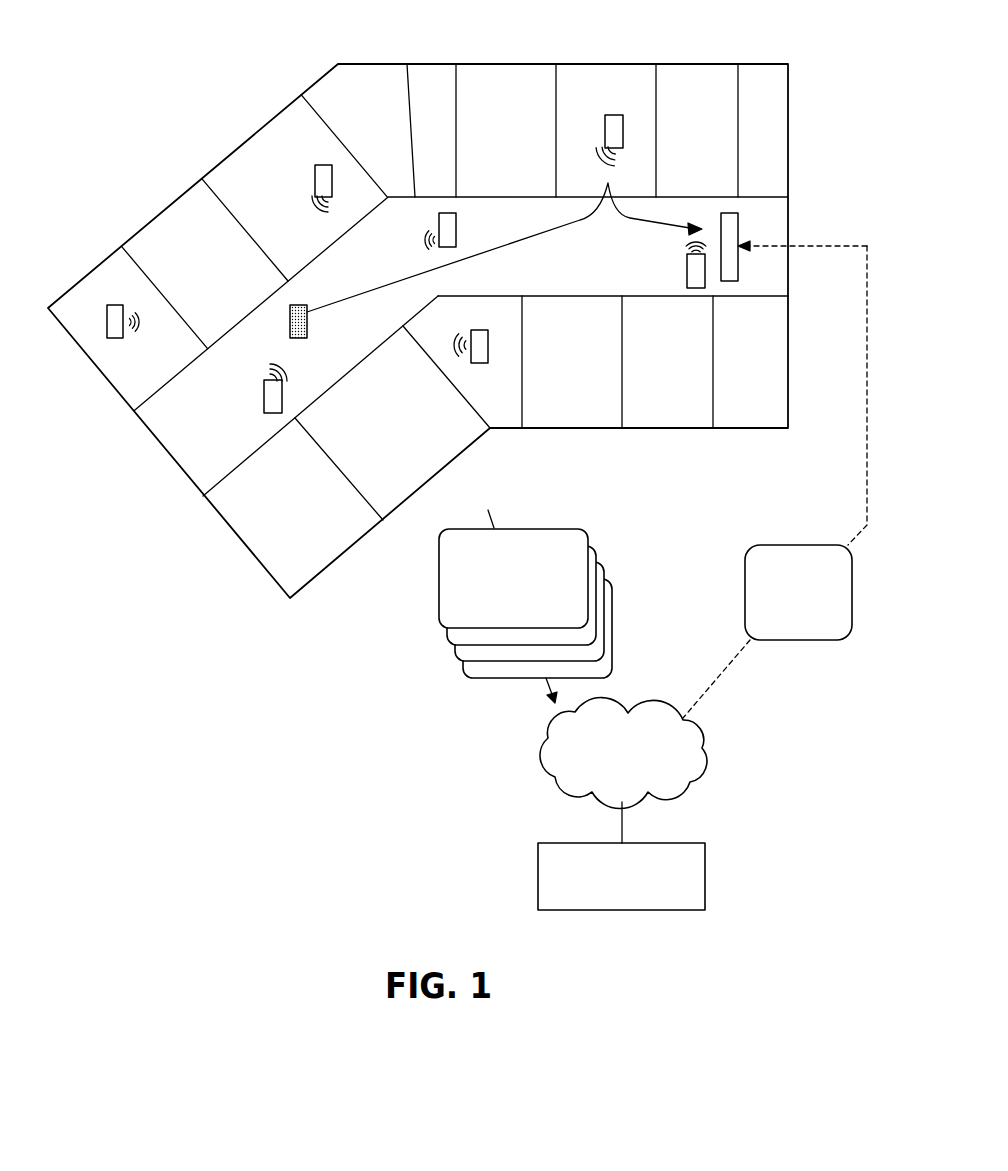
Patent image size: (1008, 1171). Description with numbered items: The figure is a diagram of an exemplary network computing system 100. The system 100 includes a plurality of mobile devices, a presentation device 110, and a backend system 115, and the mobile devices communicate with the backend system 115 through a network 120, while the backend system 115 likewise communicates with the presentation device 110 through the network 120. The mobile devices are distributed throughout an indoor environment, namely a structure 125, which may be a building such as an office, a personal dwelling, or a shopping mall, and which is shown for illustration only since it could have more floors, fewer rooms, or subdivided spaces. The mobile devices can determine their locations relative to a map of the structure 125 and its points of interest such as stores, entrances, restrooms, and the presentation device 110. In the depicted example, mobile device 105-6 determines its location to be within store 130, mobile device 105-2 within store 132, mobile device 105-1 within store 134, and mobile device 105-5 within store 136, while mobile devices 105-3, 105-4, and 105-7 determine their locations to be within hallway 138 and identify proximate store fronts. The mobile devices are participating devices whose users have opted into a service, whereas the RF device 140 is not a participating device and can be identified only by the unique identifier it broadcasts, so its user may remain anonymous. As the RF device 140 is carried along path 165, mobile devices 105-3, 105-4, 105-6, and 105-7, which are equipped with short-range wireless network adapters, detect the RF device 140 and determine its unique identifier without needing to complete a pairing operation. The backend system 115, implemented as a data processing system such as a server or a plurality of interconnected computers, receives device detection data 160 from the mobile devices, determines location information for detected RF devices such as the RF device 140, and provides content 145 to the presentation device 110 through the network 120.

The network computing system 100 is at (453, 22).
The structure 125 is at (161, 111).
The store 130 is at (593, 90).
The store 132 is at (262, 188).
The store 134 is at (152, 382).
The store 136 is at (512, 404).
The hallway 138 is at (185, 422).
The RF device 140 is at (308, 326).
The path 165 is at (398, 283).
The presentation device 110 is at (739, 231).
The mobile device 105-1 is at (107, 318).
The mobile device 105-2 is at (314, 181).
The mobile device 105-3 is at (264, 394).
The mobile device 105-4 is at (457, 231).
The mobile device 105-5 is at (502, 318).
The mobile device 105-6 is at (633, 109).
The mobile device 105-7 is at (687, 262).
The device detection data 160 is at (525, 606).
The network 120 is at (623, 753).
The backend system 115 is at (621, 856).
The content 145 is at (775, 479).